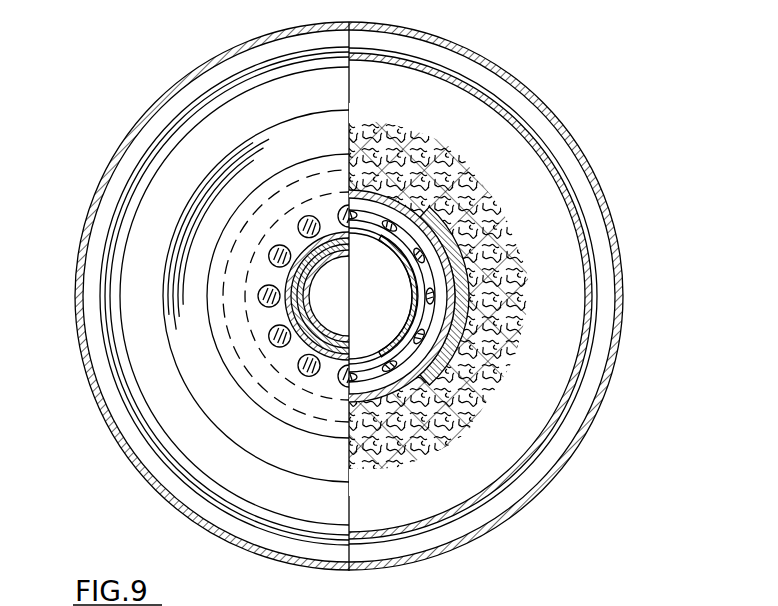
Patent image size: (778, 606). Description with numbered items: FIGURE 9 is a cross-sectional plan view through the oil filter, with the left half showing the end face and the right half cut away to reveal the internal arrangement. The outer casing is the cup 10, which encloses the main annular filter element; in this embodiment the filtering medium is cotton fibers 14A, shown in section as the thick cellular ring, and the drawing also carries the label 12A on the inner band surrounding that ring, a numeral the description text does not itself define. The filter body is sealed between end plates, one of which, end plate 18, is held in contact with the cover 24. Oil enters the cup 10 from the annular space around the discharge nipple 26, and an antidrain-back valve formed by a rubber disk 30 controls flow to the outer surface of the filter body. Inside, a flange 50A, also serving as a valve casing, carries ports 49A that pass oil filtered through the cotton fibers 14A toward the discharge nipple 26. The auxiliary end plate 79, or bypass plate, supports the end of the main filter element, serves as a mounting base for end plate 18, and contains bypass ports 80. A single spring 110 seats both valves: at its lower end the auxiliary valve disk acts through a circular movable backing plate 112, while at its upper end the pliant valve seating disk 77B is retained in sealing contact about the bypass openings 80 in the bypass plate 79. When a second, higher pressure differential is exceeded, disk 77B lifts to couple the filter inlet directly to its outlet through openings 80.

The cup 10 is at (585, 157).
The inner liner band 12A is at (530, 124).
The end plate 18 is at (568, 325).
The rubber disk 30 is at (207, 382).
The auxiliary end plate 79 is at (230, 274).
The pliant valve seating disk 77B is at (268, 251).
The ports 80 is at (303, 224).
The cover 24 is at (297, 307).
The discharge nipple 26 is at (307, 345).
The circular movable backing plate 112 is at (345, 308).
The spring 110 is at (425, 311).
The ports 49A is at (425, 258).
The cotton fibers 14A is at (488, 386).
The flange 50A is at (443, 275).